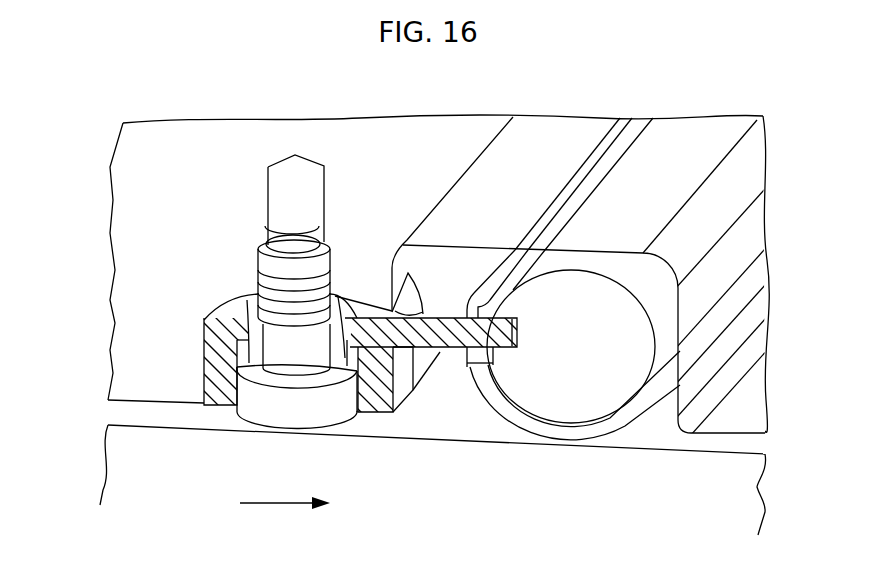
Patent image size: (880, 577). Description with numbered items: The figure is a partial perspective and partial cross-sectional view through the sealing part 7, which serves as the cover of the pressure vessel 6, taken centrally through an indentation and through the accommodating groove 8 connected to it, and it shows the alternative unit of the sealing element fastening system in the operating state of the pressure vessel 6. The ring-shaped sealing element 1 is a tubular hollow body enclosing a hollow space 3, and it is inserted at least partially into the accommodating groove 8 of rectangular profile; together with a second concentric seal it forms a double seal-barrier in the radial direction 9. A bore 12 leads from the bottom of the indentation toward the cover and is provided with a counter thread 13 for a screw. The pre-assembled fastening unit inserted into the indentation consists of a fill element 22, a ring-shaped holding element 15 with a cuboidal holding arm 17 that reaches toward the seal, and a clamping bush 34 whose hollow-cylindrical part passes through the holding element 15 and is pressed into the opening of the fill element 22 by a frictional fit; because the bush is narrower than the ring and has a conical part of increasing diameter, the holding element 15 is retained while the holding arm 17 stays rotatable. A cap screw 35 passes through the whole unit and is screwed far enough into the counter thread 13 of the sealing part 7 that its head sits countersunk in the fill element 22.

The sealing element 1 is at (631, 442).
The hollow space 3 is at (570, 360).
The pressure vessel 6 is at (152, 463).
The sealing part 7 is at (150, 236).
The accommodating groove 8 is at (663, 418).
The radial direction 9 is at (278, 505).
The bore 12 is at (293, 185).
The counter thread 13 is at (308, 228).
The holding element 15 is at (512, 360).
The holding arm 17 is at (452, 338).
The fill element 22 is at (373, 400).
The clamping bush 34 is at (200, 317).
The cap screw 35 is at (297, 405).